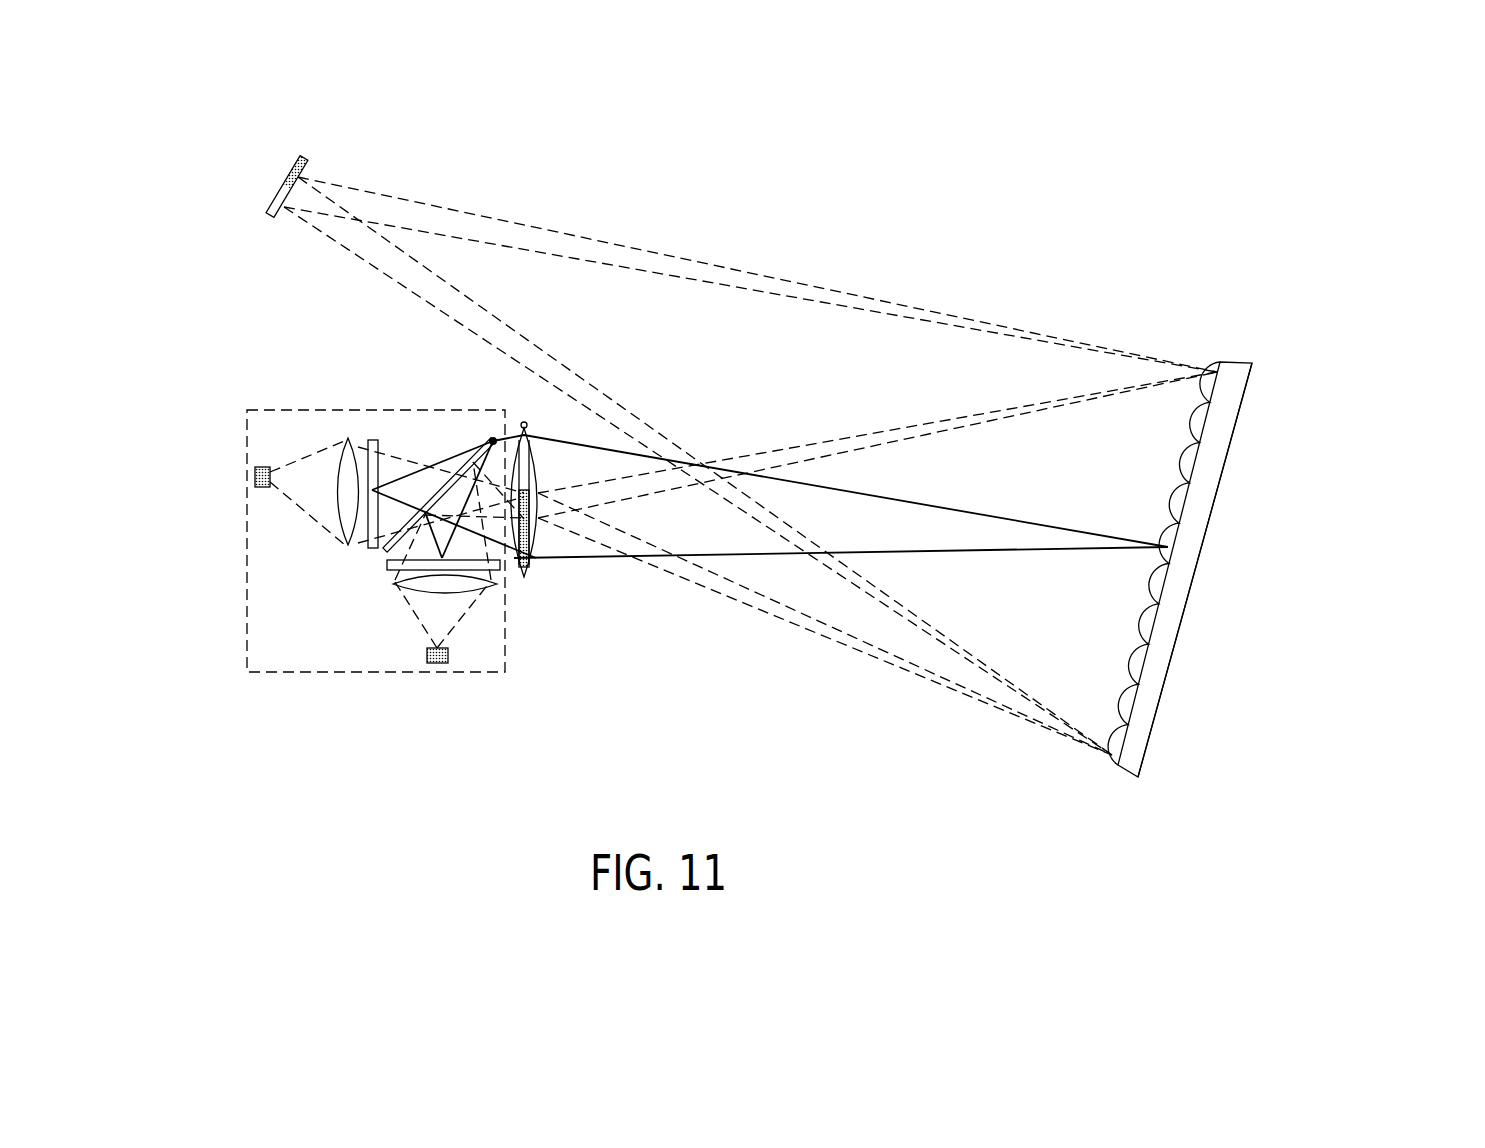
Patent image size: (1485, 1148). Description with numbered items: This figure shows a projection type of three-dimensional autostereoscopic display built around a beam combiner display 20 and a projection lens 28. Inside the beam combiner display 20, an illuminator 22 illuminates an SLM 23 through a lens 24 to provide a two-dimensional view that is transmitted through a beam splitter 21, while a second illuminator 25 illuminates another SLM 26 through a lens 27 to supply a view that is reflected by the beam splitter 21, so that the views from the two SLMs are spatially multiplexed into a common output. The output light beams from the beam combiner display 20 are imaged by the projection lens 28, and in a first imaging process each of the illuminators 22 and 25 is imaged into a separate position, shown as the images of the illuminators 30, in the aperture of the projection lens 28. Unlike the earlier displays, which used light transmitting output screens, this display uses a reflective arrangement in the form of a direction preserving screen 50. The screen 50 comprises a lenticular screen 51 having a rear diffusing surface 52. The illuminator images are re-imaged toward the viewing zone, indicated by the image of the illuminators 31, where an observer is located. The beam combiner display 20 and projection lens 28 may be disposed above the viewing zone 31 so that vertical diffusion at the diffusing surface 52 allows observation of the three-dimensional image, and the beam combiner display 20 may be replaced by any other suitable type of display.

The beam combiner display 20 is at (367, 675).
The beam splitter 21 is at (491, 438).
The illuminator 22 is at (255, 468).
The SLM 23 is at (373, 440).
The lens 24 is at (350, 438).
The illuminator 25 is at (443, 663).
The SLM 26 is at (387, 565).
The lens 27 is at (393, 582).
The projection lens 28 is at (542, 560).
The images of illuminators 30 is at (526, 578).
The image of the illuminators 31 is at (303, 153).
The direction preserving screen 50 is at (1138, 777).
The lenticular screen 51 is at (1238, 377).
The rear diffusing surface 52 is at (1217, 502).